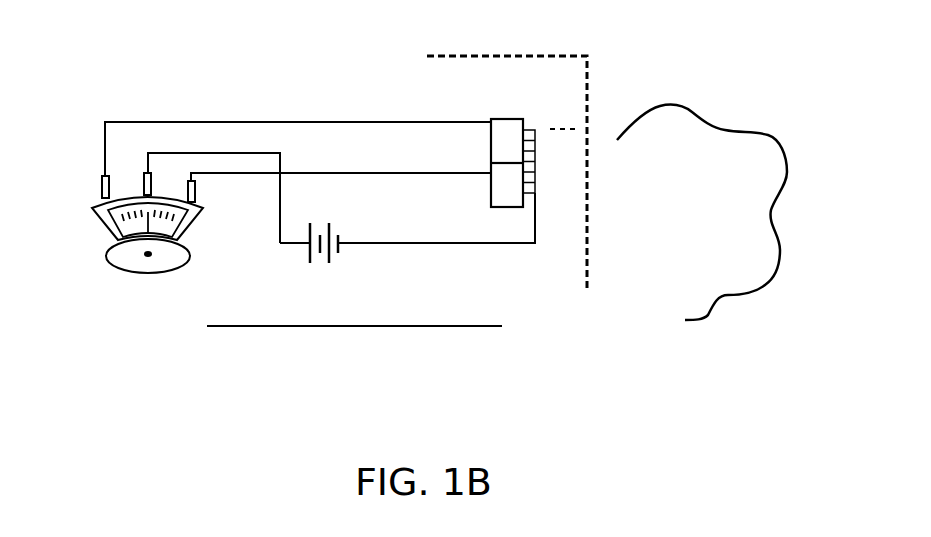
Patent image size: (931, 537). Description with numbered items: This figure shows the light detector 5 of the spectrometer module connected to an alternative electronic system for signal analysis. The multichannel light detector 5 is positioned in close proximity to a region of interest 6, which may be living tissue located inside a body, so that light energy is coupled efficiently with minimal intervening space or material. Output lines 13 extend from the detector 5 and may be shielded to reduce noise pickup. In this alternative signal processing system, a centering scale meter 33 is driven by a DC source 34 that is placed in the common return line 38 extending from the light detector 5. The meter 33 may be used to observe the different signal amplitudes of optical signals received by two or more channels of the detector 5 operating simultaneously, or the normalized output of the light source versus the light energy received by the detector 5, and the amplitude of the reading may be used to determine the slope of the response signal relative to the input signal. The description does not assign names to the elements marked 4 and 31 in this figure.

The partition wall 4 is at (588, 198).
The multichannel light detector 5 is at (515, 118).
The region of interest 6 is at (743, 143).
The output lines 13 is at (363, 122).
The base line 31 is at (382, 326).
The centering scale meter 33 is at (110, 266).
The DC source 34 is at (310, 258).
The common return line 38 is at (410, 243).